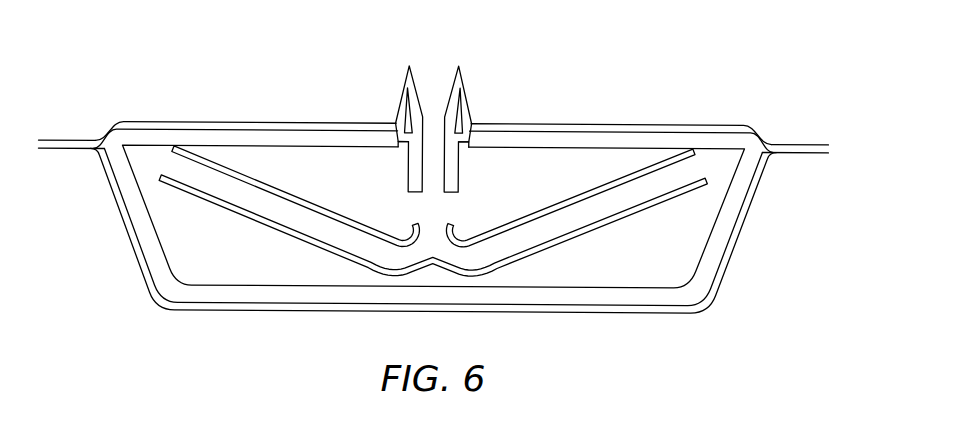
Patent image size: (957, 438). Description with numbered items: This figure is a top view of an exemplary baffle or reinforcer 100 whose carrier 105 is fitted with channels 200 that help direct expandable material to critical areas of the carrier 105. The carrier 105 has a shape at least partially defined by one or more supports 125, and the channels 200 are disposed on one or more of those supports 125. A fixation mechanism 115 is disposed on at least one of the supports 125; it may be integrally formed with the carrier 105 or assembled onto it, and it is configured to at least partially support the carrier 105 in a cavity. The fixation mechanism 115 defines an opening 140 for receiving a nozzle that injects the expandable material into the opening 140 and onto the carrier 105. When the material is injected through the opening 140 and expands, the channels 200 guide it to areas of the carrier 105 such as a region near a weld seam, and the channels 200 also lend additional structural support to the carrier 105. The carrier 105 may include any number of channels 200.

The baffle or reinforcer 100 is at (433, 185).
The carrier 105 is at (745, 215).
The fixation mechanism 115 is at (472, 80).
The support 125 is at (666, 142).
The opening 140 is at (433, 75).
The channel 200 is at (530, 257).